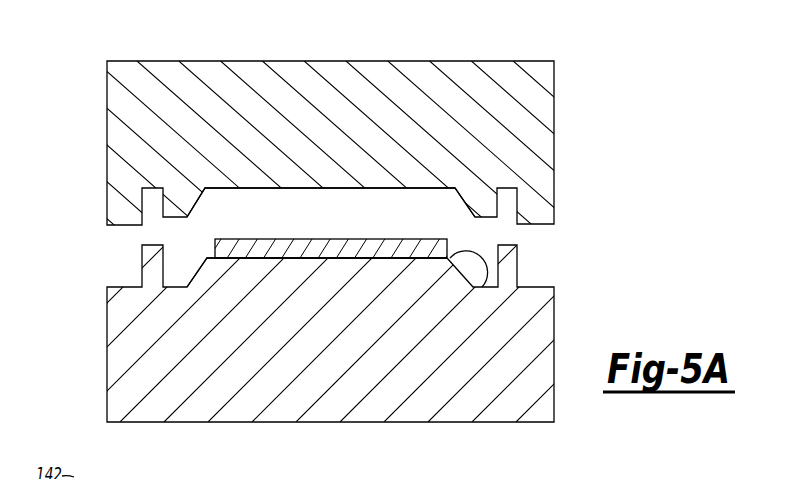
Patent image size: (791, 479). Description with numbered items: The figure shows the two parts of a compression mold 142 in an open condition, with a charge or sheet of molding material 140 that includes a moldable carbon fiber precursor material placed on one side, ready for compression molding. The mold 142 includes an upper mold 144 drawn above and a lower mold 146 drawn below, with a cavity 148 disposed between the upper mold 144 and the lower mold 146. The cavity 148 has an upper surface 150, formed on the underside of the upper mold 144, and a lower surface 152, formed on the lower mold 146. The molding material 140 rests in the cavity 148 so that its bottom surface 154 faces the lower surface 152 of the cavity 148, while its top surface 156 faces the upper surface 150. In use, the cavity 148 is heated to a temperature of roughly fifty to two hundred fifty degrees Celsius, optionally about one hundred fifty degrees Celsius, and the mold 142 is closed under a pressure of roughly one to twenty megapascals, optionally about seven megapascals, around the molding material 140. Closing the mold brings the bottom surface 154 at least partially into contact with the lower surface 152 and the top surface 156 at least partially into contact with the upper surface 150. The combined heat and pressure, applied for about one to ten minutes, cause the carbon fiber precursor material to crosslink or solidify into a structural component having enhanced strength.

The molding material 140 is at (252, 250).
The mold 142 is at (128, 60).
The upper mold 144 is at (225, 83).
The lower mold 146 is at (427, 400).
The cavity 148 is at (410, 215).
The upper surface 150 is at (270, 189).
The lower surface 152 is at (481, 287).
The bottom surface 154 is at (312, 239).
The top surface 156 is at (303, 258).